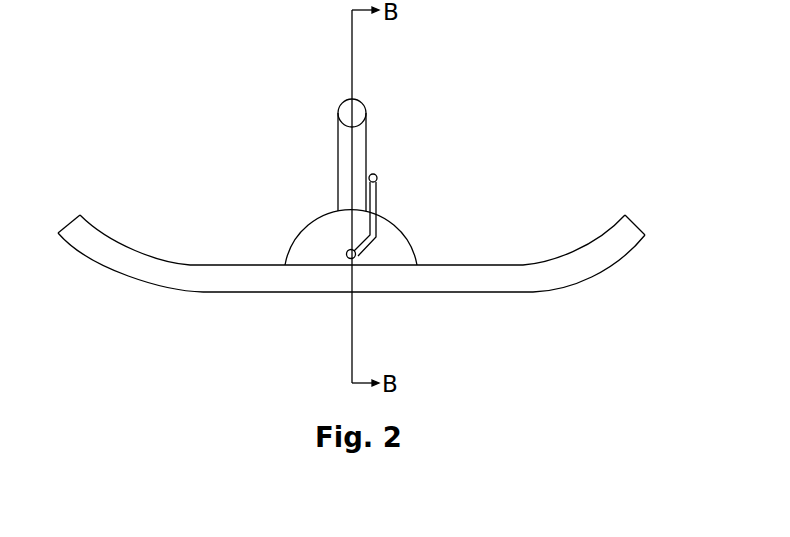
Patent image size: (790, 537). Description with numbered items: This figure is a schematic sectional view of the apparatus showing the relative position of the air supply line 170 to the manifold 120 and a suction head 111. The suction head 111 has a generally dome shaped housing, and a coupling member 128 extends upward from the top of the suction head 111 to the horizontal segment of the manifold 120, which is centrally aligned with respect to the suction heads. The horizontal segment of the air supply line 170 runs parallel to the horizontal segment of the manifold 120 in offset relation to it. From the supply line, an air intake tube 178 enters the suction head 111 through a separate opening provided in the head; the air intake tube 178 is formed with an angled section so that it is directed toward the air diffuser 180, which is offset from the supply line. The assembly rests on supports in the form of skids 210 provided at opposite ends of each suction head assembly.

The suction head 111 is at (417, 252).
The manifold 120 is at (338, 115).
The coupling member 128 is at (350, 183).
The air supply line 170 is at (377, 175).
The air intake tube 178 is at (376, 220).
The air diffuser 180 is at (356, 258).
The skid 210 is at (190, 265).